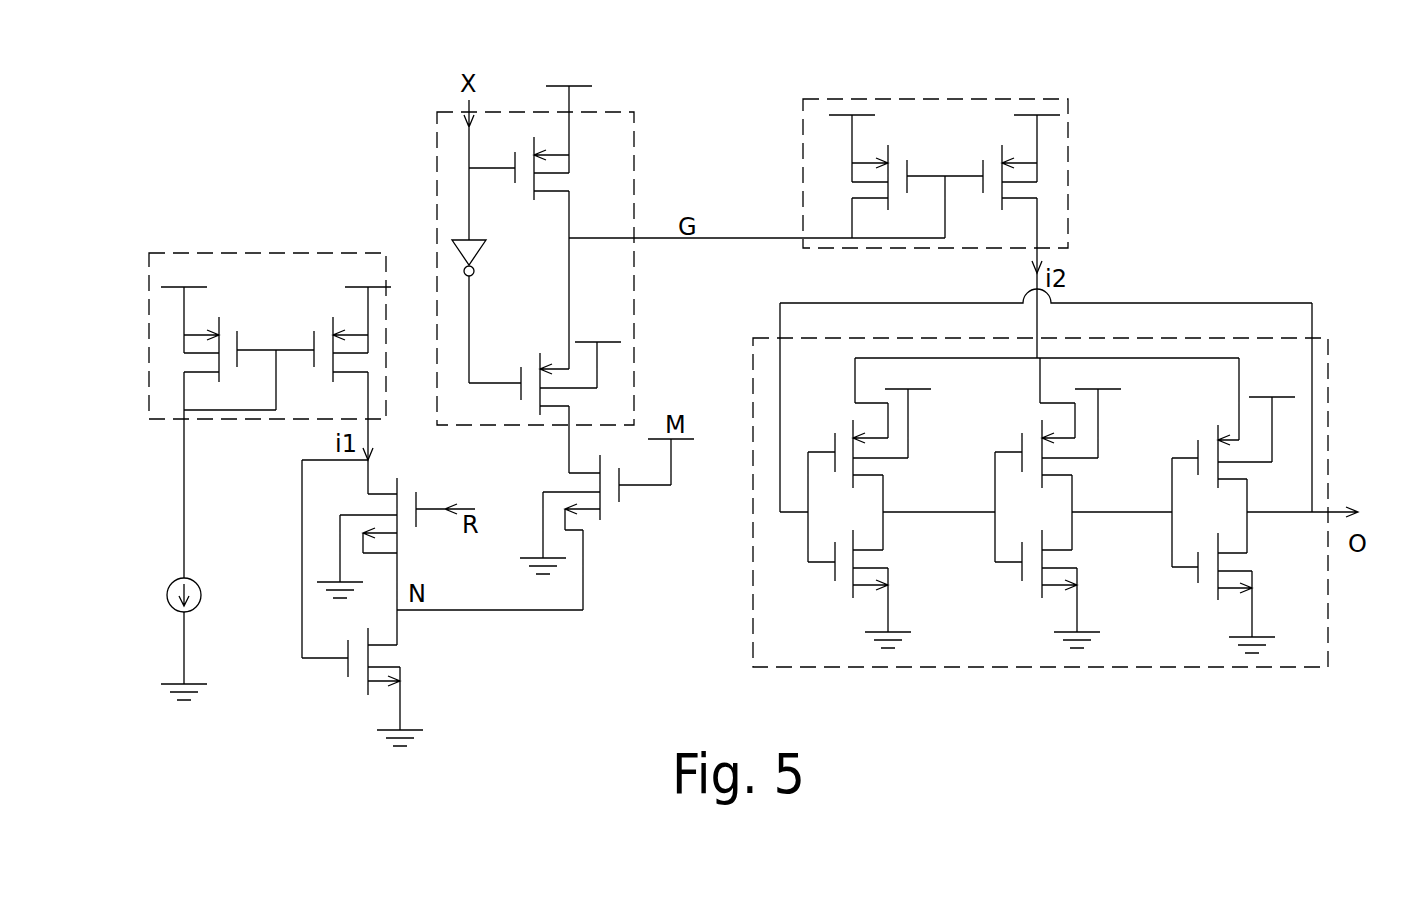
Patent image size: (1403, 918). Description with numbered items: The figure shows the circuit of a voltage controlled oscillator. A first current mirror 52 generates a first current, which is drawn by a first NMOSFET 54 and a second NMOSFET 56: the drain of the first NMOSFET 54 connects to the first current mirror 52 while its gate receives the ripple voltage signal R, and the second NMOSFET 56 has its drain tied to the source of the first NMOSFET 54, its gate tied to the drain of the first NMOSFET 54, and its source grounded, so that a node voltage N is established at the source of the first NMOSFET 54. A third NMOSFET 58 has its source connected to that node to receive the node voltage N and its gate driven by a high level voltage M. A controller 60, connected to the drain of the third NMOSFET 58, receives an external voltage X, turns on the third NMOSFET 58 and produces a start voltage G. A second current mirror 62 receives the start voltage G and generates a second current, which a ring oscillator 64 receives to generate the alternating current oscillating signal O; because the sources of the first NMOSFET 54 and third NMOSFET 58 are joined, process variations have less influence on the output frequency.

The first current mirror 52 is at (215, 253).
The first N-channel metal oxide semiconductor field effect transistor 54 is at (398, 478).
The second N-channel metal oxide semiconductor field effect transistor 56 is at (404, 681).
The third N-channel metal oxide semiconductor field effect transistor 58 is at (601, 520).
The controller 60 is at (636, 112).
The second current mirror 62 is at (1058, 99).
The ring oscillator 64 is at (1328, 338).